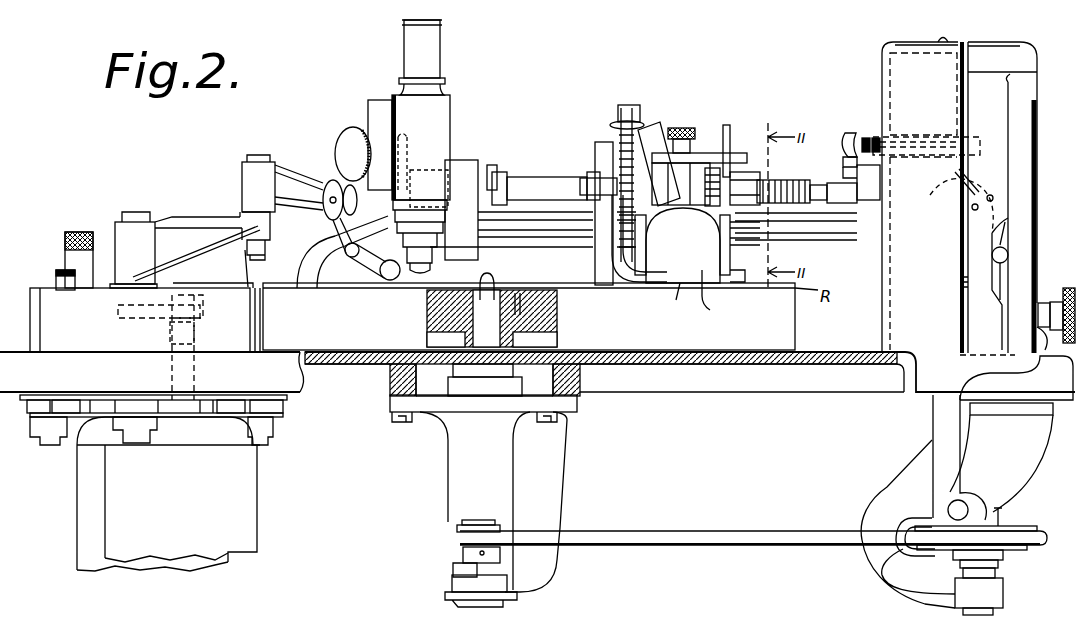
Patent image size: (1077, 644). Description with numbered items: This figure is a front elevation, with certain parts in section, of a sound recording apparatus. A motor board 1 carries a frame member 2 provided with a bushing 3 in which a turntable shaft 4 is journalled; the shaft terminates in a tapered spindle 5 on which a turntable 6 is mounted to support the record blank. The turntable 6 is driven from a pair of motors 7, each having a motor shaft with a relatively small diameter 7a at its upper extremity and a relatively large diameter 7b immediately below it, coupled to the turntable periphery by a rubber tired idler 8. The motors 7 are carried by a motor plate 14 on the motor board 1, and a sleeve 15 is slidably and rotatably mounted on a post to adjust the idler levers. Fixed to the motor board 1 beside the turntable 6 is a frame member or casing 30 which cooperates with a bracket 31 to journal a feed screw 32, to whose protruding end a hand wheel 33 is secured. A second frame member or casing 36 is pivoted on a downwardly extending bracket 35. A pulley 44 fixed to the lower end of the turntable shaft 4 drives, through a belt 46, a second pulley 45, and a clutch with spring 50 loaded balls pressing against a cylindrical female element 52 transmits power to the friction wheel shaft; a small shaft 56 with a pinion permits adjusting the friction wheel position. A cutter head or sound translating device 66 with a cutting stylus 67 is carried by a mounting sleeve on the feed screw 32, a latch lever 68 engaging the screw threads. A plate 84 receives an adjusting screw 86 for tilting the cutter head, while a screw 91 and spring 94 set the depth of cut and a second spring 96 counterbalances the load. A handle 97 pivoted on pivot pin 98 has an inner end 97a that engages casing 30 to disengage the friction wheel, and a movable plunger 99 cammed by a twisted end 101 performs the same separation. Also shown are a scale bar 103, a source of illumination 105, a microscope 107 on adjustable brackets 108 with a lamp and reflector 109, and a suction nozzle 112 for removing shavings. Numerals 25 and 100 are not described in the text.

The motor board 1 is at (783, 392).
The frame member 2 is at (557, 477).
The bushing 3 is at (462, 470).
The turntable shaft 4 is at (460, 572).
The tapered spindle 5 is at (428, 335).
The turntable 6 is at (783, 317).
The motors 7 is at (97, 567).
The relatively small diameter portion of motor shaft 7a is at (207, 305).
The relatively large diameter portion of motor shaft 7b is at (198, 337).
The rubber tired idler 8 is at (118, 315).
The motor plate 14 is at (180, 415).
The sleeve 15 is at (63, 247).
The stop 25 is at (55, 282).
The frame member or casing 30 is at (903, 75).
The bracket 31 is at (462, 162).
The feed screw 32 is at (787, 182).
The hand wheel 33 is at (500, 250).
The downwardly extending bracket 35 is at (1010, 470).
The second frame member or casing 36 is at (1027, 88).
The pulley 44 is at (460, 547).
The second pulley 45 is at (1010, 525).
The belt 46 is at (717, 540).
The coil spring 50 is at (1048, 341).
The cylindrical female element of the clutch 52 is at (1003, 562).
The small shaft 56 is at (1055, 302).
The sound translating device 66 is at (710, 310).
The cutting stylus 67 is at (676, 300).
The latch lever 68 is at (732, 118).
The plate 84 is at (712, 168).
The adjusting screw 86 is at (670, 130).
The screw 91 is at (628, 106).
The spring 94 is at (618, 166).
The second spring 96 is at (690, 245).
The handle 97 is at (1005, 238).
The inner end of handle 97a is at (923, 199).
The pivot pin 98 is at (992, 197).
The movable plunger 99 is at (863, 135).
The shaft 100 is at (873, 140).
The twisted end 101 is at (847, 133).
The scale bar 103 is at (846, 178).
The source of illumination 105 is at (837, 243).
The microscope 107 is at (432, 60).
The adjustable brackets 108 is at (282, 162).
The lamp and reflector 109 is at (388, 282).
The nozzle 112 is at (611, 265).